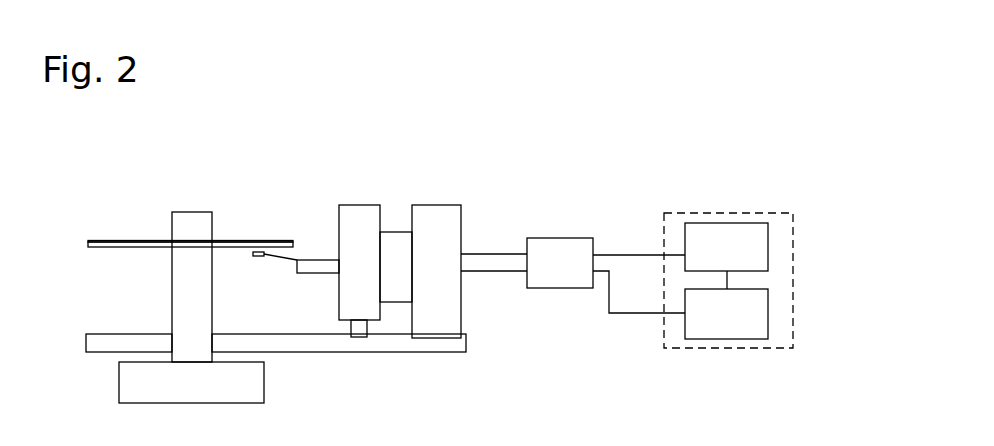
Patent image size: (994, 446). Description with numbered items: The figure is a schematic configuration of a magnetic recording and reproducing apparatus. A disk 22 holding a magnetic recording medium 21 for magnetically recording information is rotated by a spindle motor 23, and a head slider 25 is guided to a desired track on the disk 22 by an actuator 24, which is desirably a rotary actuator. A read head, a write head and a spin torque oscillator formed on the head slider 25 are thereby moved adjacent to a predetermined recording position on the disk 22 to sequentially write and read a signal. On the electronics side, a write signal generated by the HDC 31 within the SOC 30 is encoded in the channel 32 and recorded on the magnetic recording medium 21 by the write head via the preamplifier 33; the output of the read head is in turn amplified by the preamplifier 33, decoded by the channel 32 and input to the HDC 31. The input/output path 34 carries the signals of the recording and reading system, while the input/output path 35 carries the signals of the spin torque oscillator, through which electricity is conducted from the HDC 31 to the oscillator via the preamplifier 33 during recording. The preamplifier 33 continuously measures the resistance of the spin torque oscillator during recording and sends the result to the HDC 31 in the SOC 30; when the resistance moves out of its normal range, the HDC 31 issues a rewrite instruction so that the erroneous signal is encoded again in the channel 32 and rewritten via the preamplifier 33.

The magnetic recording medium 21 is at (118, 248).
The disk 22 is at (92, 248).
The spindle motor 23 is at (253, 379).
The actuator 24 is at (357, 208).
The head slider 25 is at (253, 258).
The SOC 30 is at (794, 237).
The HDC 31 is at (728, 333).
The channel 32 is at (728, 228).
The preamplifier 33 is at (575, 243).
The input/output path of recording/reading system 34 is at (637, 253).
The input/output path of spin torque oscillator 35 is at (493, 273).